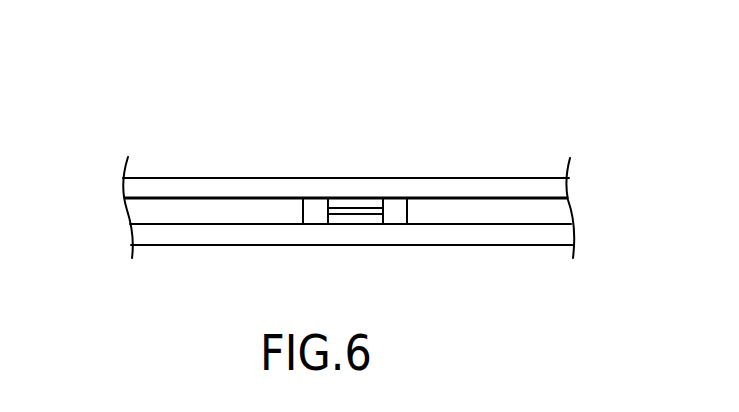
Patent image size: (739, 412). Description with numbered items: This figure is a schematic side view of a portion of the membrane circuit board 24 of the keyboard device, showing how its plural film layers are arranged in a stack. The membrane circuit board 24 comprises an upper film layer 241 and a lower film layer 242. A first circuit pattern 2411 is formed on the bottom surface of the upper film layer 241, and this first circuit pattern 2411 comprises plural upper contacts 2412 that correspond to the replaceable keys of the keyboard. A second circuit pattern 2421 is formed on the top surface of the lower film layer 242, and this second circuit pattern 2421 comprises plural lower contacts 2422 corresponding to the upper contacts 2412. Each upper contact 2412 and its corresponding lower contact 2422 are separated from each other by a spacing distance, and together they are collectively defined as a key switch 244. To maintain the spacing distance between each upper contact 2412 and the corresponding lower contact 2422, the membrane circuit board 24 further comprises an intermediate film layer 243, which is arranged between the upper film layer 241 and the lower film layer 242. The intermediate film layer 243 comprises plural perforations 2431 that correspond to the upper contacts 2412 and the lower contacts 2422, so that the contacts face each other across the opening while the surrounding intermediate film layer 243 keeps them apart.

The membrane circuit board 24 is at (240, 85).
The upper film layer 241 is at (219, 185).
The first circuit pattern 2411 is at (443, 198).
The upper contact 2412 is at (358, 202).
The lower film layer 242 is at (189, 237).
The second circuit pattern 2421 is at (266, 225).
The lower contact 2422 is at (358, 218).
The intermediate film layer 243 is at (146, 216).
The perforation 2431 is at (397, 211).
The key switch 244 is at (500, 112).